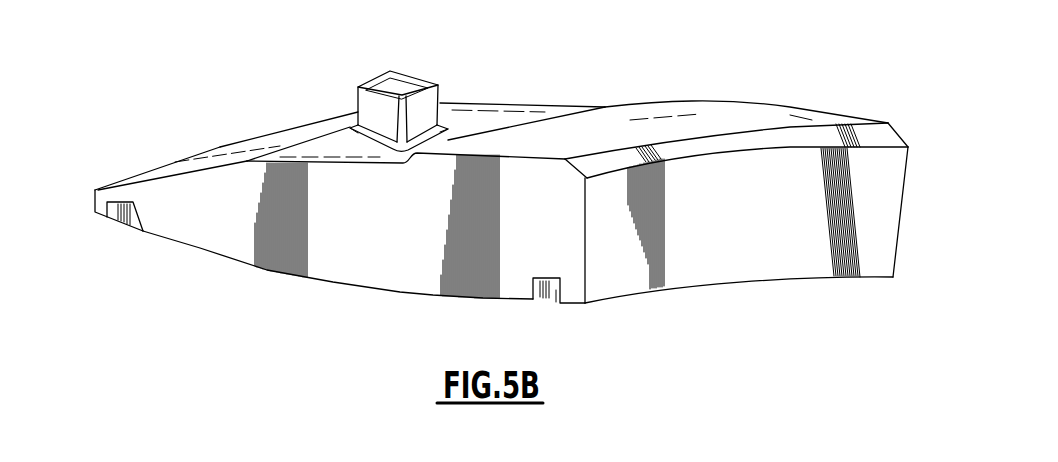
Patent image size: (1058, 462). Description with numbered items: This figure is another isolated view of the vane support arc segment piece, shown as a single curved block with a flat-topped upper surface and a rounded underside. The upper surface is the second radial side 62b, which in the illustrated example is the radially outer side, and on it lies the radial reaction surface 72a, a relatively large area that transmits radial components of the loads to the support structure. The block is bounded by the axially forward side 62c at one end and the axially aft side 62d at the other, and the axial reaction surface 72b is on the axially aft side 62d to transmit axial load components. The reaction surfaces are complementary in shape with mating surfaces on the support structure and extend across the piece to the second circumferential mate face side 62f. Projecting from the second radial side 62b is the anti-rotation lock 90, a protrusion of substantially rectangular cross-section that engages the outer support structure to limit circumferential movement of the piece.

The second radial side 62b is at (500, 117).
The axially forward side 62c is at (97, 196).
The axially aft side 62d is at (883, 207).
The second circumferential mate face side 62f is at (350, 264).
The radial reaction surface 72a is at (677, 117).
The axial reaction surface 72b is at (732, 262).
The anti-rotation lock 90 is at (436, 74).